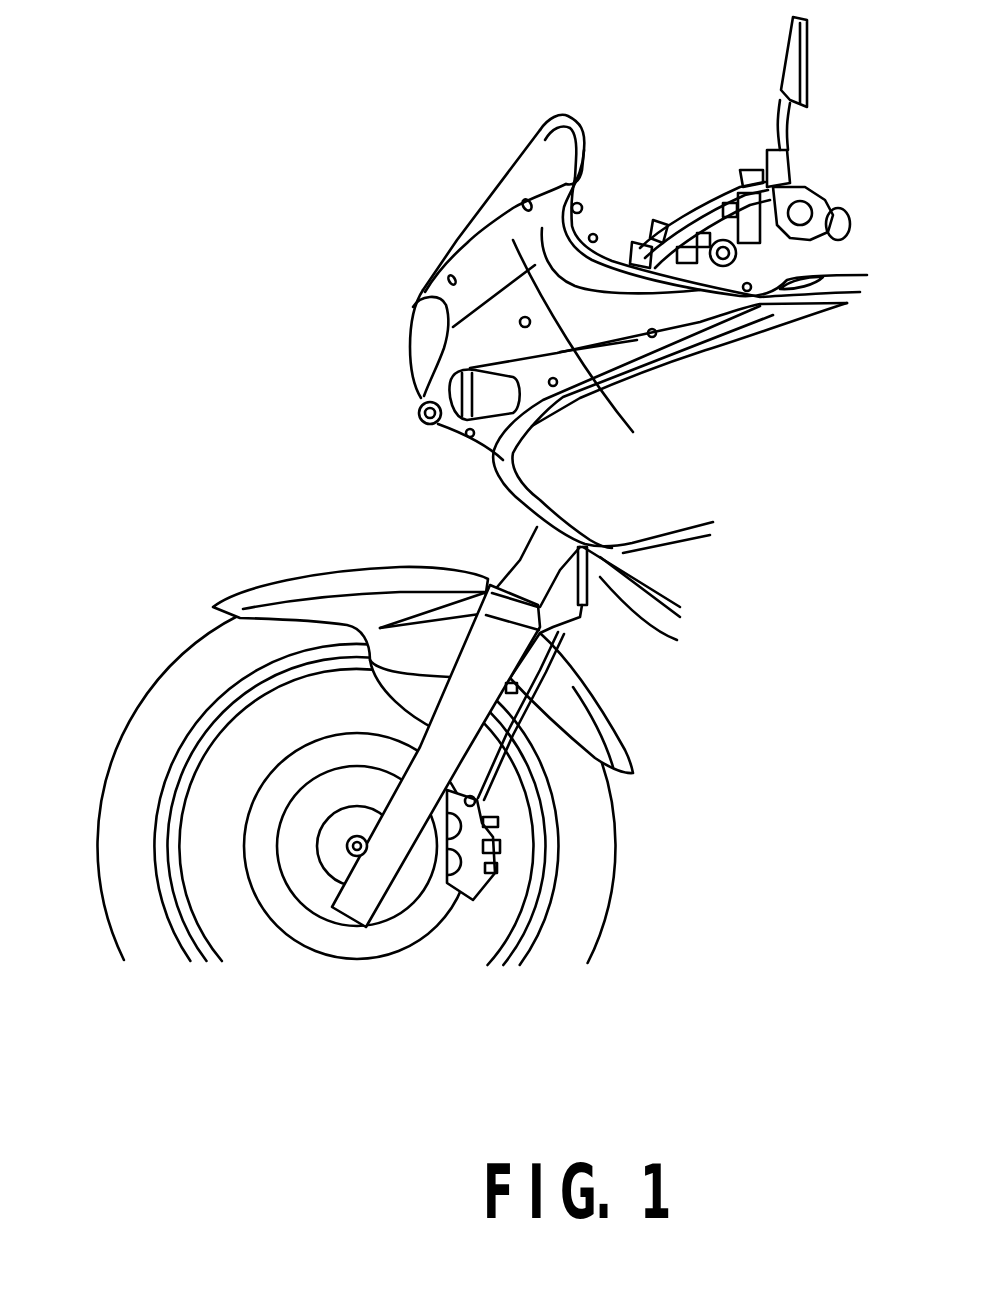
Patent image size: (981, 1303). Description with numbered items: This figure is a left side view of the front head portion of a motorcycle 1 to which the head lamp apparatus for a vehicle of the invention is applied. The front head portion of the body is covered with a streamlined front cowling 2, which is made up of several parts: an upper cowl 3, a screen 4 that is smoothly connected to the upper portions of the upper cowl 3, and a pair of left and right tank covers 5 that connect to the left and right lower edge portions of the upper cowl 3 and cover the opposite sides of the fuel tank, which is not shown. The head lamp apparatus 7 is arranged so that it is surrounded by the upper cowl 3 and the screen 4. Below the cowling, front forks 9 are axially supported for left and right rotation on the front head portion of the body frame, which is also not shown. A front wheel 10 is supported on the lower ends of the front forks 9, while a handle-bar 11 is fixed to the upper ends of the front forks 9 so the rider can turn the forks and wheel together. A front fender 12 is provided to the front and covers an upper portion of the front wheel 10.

The motorcycle 1 is at (273, 137).
The front cowling 2 is at (384, 22).
The upper cowl 3 is at (483, 265).
The screen 4 is at (533, 150).
The tank covers 5 is at (513, 240).
The head lamp apparatus 7 is at (411, 350).
The front forks 9 is at (432, 728).
The front wheel 10 is at (147, 698).
The handle-bar 11 is at (835, 213).
The front fender 12 is at (418, 570).